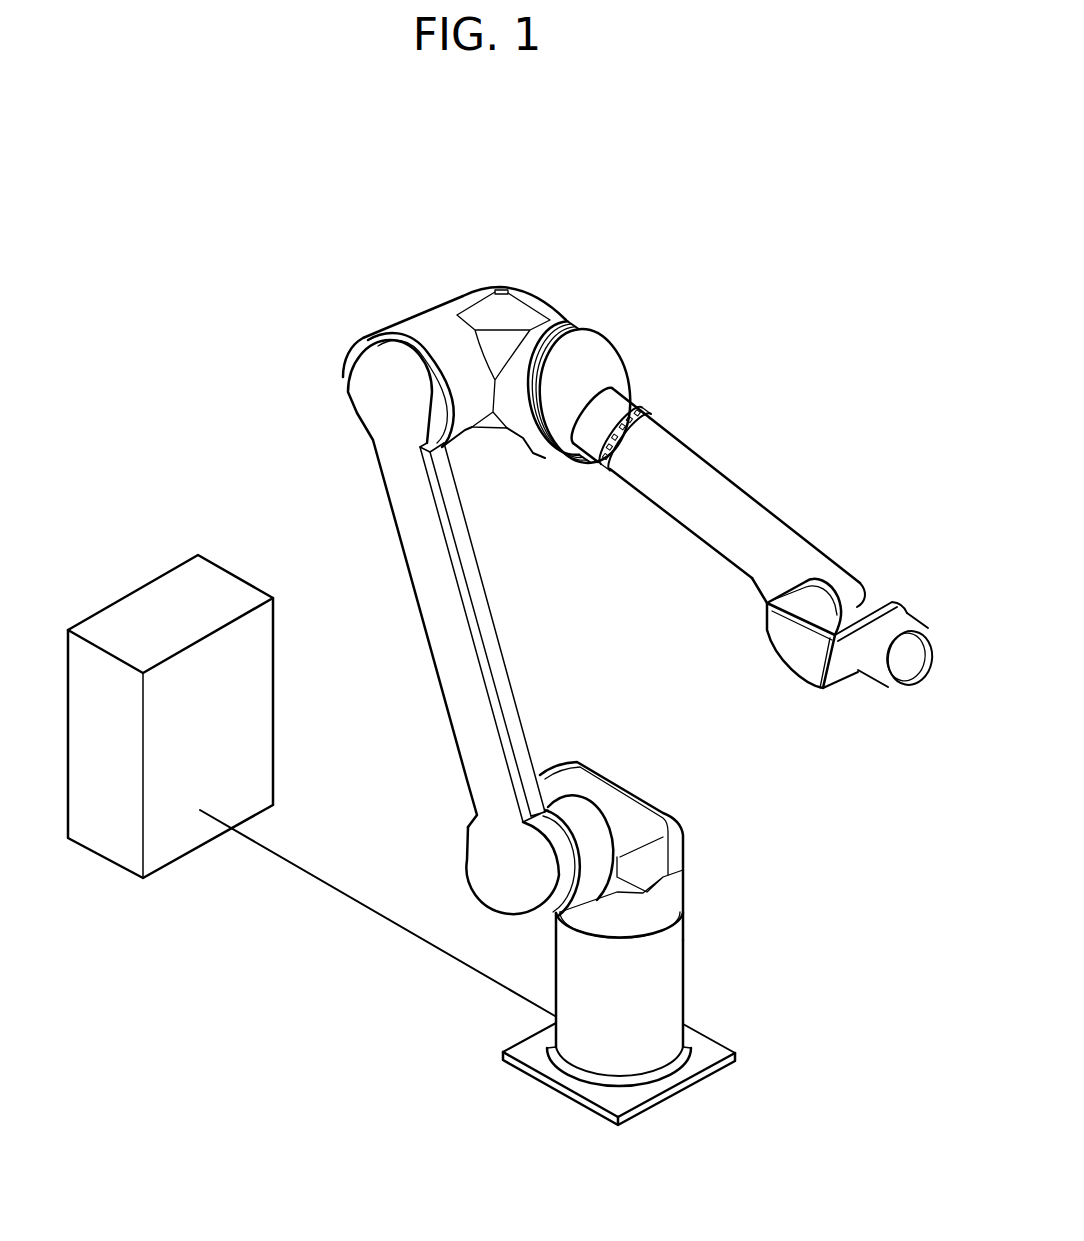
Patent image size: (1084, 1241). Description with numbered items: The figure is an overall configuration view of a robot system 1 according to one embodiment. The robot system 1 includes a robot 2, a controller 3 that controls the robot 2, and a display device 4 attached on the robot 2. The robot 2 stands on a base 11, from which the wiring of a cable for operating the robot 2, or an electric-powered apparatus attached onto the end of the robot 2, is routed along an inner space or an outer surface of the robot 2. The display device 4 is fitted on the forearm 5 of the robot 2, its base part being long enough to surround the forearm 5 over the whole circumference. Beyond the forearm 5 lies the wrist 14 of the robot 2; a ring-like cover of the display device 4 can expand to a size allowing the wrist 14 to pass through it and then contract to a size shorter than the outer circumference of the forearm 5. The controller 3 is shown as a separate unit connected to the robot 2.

The robot system 1 is at (218, 205).
The robot 2 is at (366, 314).
The controller 3 is at (137, 605).
The display device 4 is at (656, 405).
The forearm 5 is at (730, 507).
The base 11 is at (703, 1048).
The wrist 14 is at (877, 663).